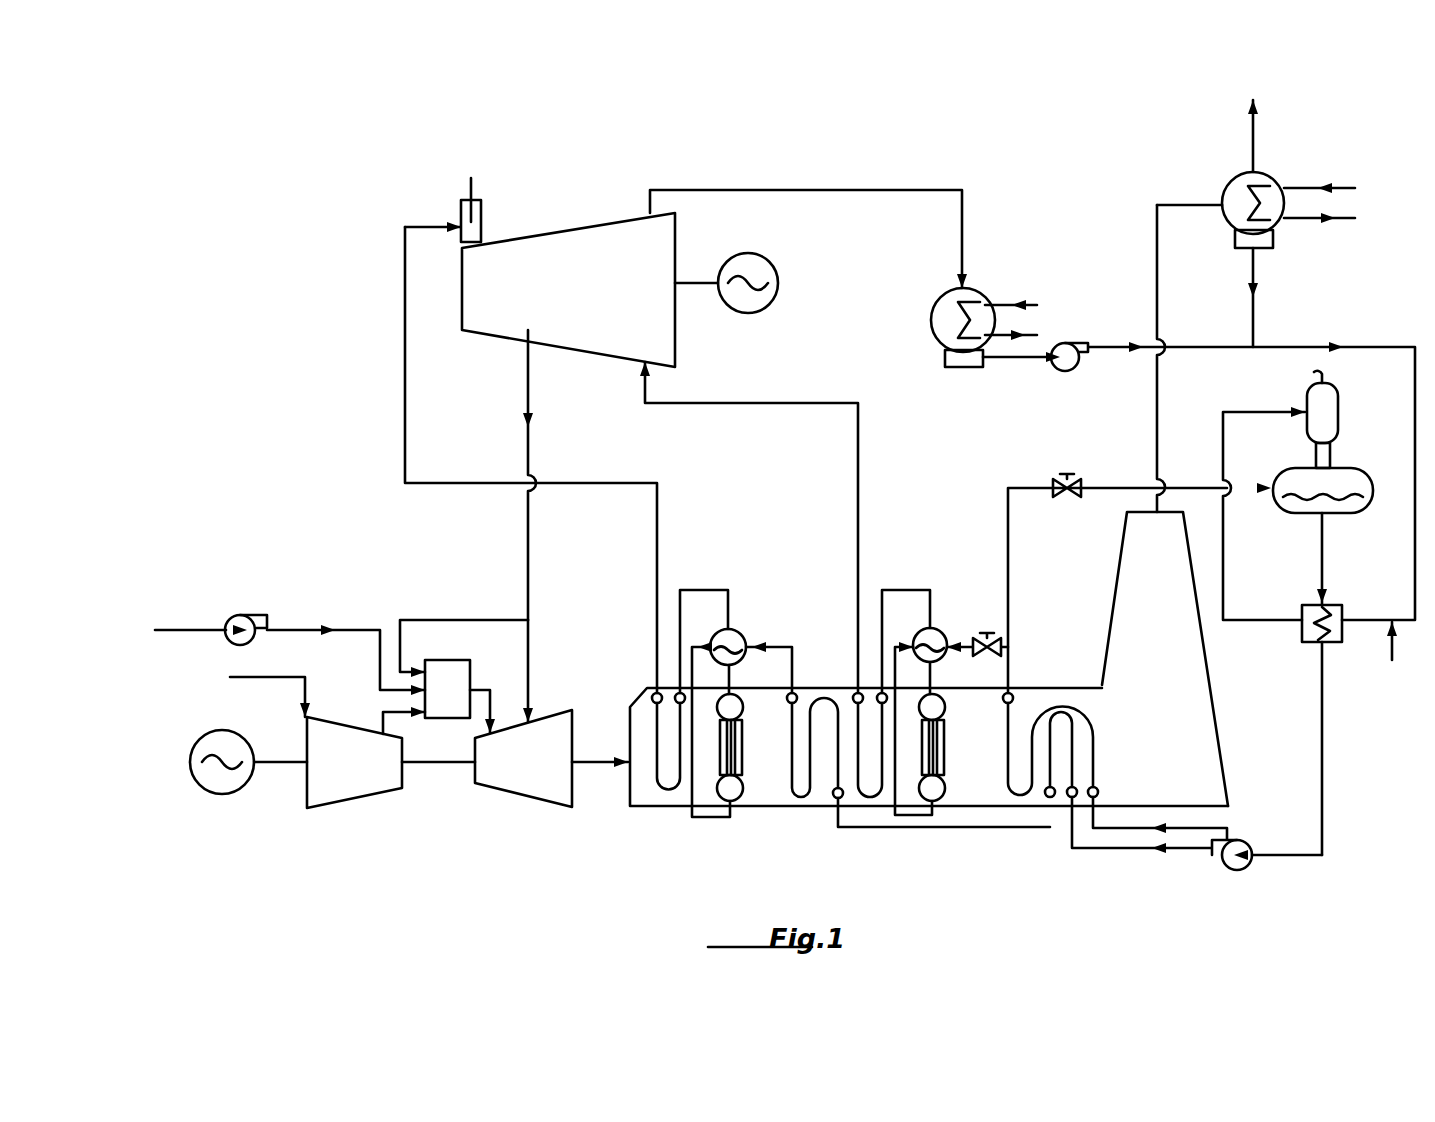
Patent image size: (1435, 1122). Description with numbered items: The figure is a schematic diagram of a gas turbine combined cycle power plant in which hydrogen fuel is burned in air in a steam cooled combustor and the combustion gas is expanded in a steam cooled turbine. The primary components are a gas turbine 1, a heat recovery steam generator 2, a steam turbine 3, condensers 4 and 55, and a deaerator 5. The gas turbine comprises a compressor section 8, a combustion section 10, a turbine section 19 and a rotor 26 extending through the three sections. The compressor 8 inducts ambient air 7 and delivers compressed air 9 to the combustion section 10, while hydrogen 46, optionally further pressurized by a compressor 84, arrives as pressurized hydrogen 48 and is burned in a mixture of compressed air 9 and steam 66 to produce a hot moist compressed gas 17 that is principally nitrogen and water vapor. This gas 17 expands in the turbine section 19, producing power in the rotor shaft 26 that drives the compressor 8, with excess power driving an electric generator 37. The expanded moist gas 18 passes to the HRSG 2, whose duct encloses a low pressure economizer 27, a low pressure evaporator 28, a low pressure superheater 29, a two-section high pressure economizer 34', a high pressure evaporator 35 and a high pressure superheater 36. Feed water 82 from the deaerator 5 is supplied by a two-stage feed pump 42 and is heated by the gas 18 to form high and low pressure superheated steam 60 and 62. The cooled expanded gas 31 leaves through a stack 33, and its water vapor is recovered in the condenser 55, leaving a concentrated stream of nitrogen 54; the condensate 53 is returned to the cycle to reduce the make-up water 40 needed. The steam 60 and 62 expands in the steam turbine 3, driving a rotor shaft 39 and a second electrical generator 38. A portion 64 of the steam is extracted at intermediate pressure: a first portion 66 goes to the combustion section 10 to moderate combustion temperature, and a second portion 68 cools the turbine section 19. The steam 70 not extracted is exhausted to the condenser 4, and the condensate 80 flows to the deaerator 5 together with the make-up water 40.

The gas turbine 1 is at (439, 741).
The heat recovery steam generator 2 is at (772, 815).
The steam turbine 3 is at (552, 238).
The condenser 4 is at (935, 298).
The deaerator 5 is at (1358, 470).
The ambient air 7 is at (242, 680).
The compressor section 8 is at (348, 800).
The compressed air 9 is at (380, 706).
The combustion section 10 is at (445, 660).
The hot moist compressed gas 17 is at (488, 690).
The expanded moist gas 18 is at (600, 765).
The turbine section 19 is at (528, 790).
The rotor 26 is at (440, 765).
The low pressure economizer 27 is at (1092, 730).
The low pressure evaporator 28 is at (945, 762).
The low pressure superheater 29 is at (870, 803).
The cooled expanded gas 31 is at (1153, 433).
The stack 33 is at (1215, 700).
The high pressure economizer section 34' is at (1105, 749).
The high pressure evaporator 35 is at (745, 762).
The high pressure superheater 36 is at (660, 790).
The electric generator 37 is at (228, 790).
The second electrical generator 38 is at (781, 265).
The rotor shaft 39 is at (692, 278).
The make-up water 40 is at (1392, 652).
The two-stage feed pump 42 is at (1240, 840).
The hydrogen 46 is at (178, 630).
The pressurized hydrogen 48 is at (360, 620).
The condensate 53 is at (1258, 278).
The nitrogen 54 is at (1253, 142).
The condenser 55 is at (1268, 178).
The high pressure superheated steam 60 is at (660, 522).
The low pressure superheated steam 62 is at (862, 485).
The extraction steam 64 is at (530, 400).
The first portion of extraction steam 66 is at (455, 620).
The second portion of extraction steam 68 is at (540, 655).
The steam not extracted 70 is at (795, 190).
The condensate 80 is at (1200, 345).
The feed water 82 is at (1325, 790).
The compressor 84 is at (258, 612).